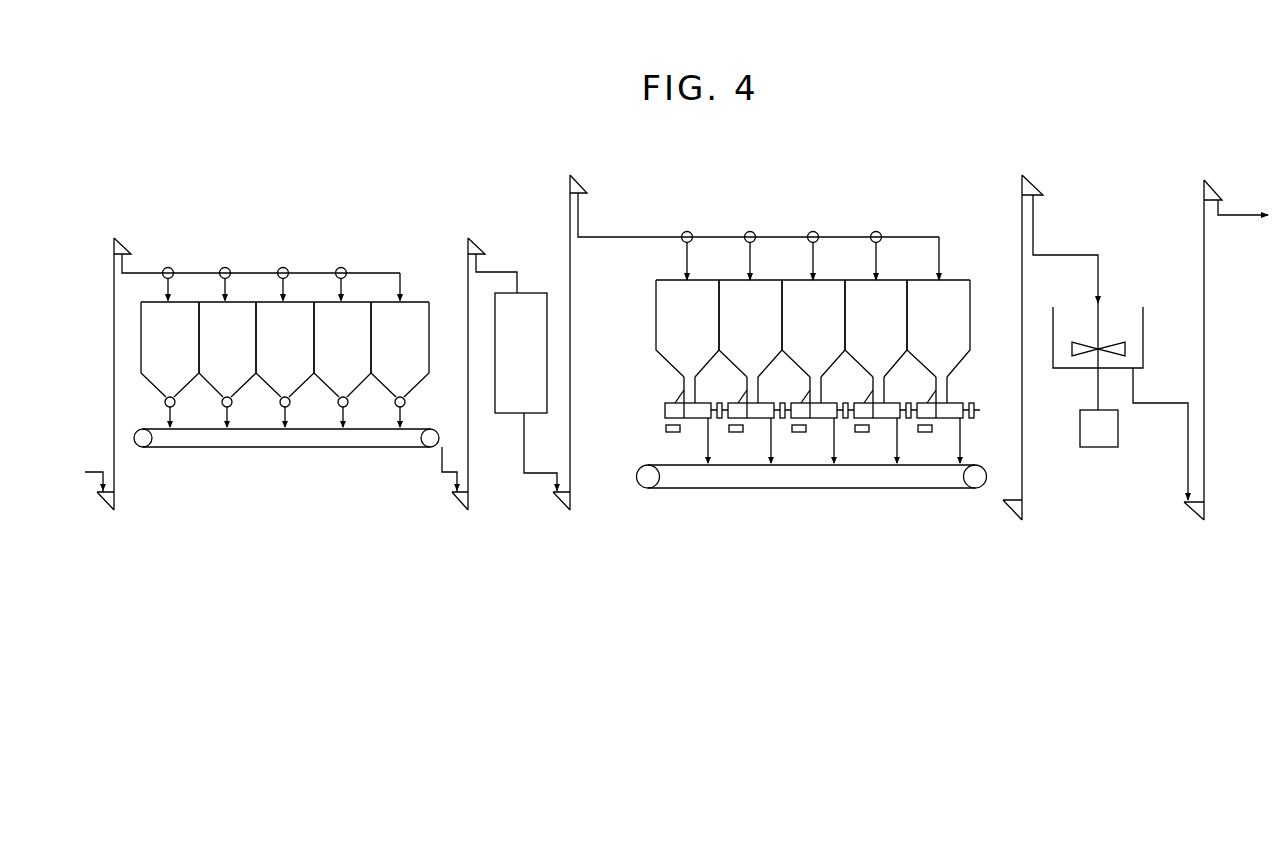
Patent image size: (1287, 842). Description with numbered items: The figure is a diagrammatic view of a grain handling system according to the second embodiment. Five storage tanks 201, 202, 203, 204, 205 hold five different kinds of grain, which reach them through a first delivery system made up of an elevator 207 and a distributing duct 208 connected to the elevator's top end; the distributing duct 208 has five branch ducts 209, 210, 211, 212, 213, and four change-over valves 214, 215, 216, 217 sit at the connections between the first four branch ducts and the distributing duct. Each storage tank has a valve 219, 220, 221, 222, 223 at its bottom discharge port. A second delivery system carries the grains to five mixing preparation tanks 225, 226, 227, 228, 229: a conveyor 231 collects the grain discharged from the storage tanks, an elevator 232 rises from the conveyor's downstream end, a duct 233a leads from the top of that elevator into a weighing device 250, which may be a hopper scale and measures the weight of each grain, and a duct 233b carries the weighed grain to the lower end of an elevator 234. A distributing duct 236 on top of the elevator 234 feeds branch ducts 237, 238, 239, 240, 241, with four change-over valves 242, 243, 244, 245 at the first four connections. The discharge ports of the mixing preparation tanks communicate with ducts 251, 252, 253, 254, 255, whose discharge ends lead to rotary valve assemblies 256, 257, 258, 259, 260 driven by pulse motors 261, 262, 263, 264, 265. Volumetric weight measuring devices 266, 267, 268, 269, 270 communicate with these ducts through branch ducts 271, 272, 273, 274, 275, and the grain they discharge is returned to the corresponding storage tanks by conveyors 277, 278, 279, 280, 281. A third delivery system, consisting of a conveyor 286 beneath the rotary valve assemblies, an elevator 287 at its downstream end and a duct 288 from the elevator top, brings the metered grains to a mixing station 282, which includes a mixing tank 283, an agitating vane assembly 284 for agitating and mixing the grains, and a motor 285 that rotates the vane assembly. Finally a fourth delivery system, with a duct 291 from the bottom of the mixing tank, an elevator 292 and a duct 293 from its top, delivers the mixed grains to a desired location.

The storage tank 201 is at (149, 342).
The storage tank 202 is at (206, 342).
The storage tank 203 is at (264, 342).
The storage tank 204 is at (322, 342).
The storage tank 205 is at (379, 342).
The elevator 207 is at (114, 472).
The distributing duct 208 is at (140, 272).
The branch duct 209 is at (171, 283).
The branch duct 210 is at (228, 283).
The branch duct 211 is at (286, 283).
The branch duct 212 is at (344, 283).
The branch duct 213 is at (401, 279).
The change-over valve 214 is at (168, 267).
The change-over valve 215 is at (225, 267).
The change-over valve 216 is at (283, 267).
The change-over valve 217 is at (341, 267).
The valve 219 is at (165, 408).
The valve 220 is at (222, 408).
The valve 221 is at (280, 408).
The valve 222 is at (338, 408).
The valve 223 is at (395, 408).
The mixing preparation tank 225 is at (666, 312).
The mixing preparation tank 226 is at (729, 312).
The mixing preparation tank 227 is at (792, 312).
The mixing preparation tank 228 is at (855, 312).
The mixing preparation tank 229 is at (918, 312).
The conveyor 231 is at (312, 448).
The elevator 232 is at (468, 448).
The duct 233a is at (507, 272).
The duct 233b is at (540, 450).
The elevator 234 is at (570, 310).
The distributing duct 236 is at (610, 237).
The branch duct 237 is at (685, 256).
The branch duct 238 is at (748, 256).
The branch duct 239 is at (811, 258).
The branch duct 240 is at (874, 256).
The branch duct 241 is at (937, 258).
The change-over valve 242 is at (687, 232).
The change-over valve 243 is at (750, 232).
The change-over valve 244 is at (813, 232).
The change-over valve 245 is at (876, 232).
The weighing device 250 is at (538, 293).
The duct 251 is at (689, 377).
The duct 252 is at (752, 377).
The duct 253 is at (815, 377).
The duct 254 is at (878, 377).
The duct 255 is at (941, 377).
The rotary valve assembly 256 is at (697, 413).
The rotary valve assembly 257 is at (760, 413).
The rotary valve assembly 258 is at (822, 413).
The rotary valve assembly 259 is at (885, 413).
The rotary valve assembly 260 is at (948, 413).
The pulse motor 261 is at (720, 418).
The pulse motor 262 is at (783, 418).
The pulse motor 263 is at (846, 418).
The pulse motor 264 is at (909, 418).
The pulse motor 265 is at (980, 412).
The volumetric weight measuring device 266 is at (665, 410).
The volumetric weight measuring device 267 is at (755, 418).
The volumetric weight measuring device 268 is at (818, 418).
The volumetric weight measuring device 269 is at (881, 418).
The volumetric weight measuring device 270 is at (944, 418).
The branch duct 271 is at (677, 397).
The branch duct 272 is at (741, 397).
The branch duct 273 is at (804, 397).
The branch duct 274 is at (867, 397).
The branch duct 275 is at (933, 402).
The conveyor 277 is at (666, 428).
The conveyor 278 is at (736, 432).
The conveyor 279 is at (799, 432).
The conveyor 280 is at (862, 432).
The conveyor 281 is at (925, 432).
The mixing station 282 is at (1075, 380).
The mixing tank 283 is at (1052, 323).
The agitating vane assembly 284 is at (1115, 333).
The motor 285 is at (1118, 428).
The conveyor 286 is at (663, 490).
The elevator 287 is at (1022, 485).
The duct 288 is at (1037, 225).
The duct 291 is at (1163, 403).
The elevator 292 is at (1204, 355).
The duct 293 is at (1237, 215).